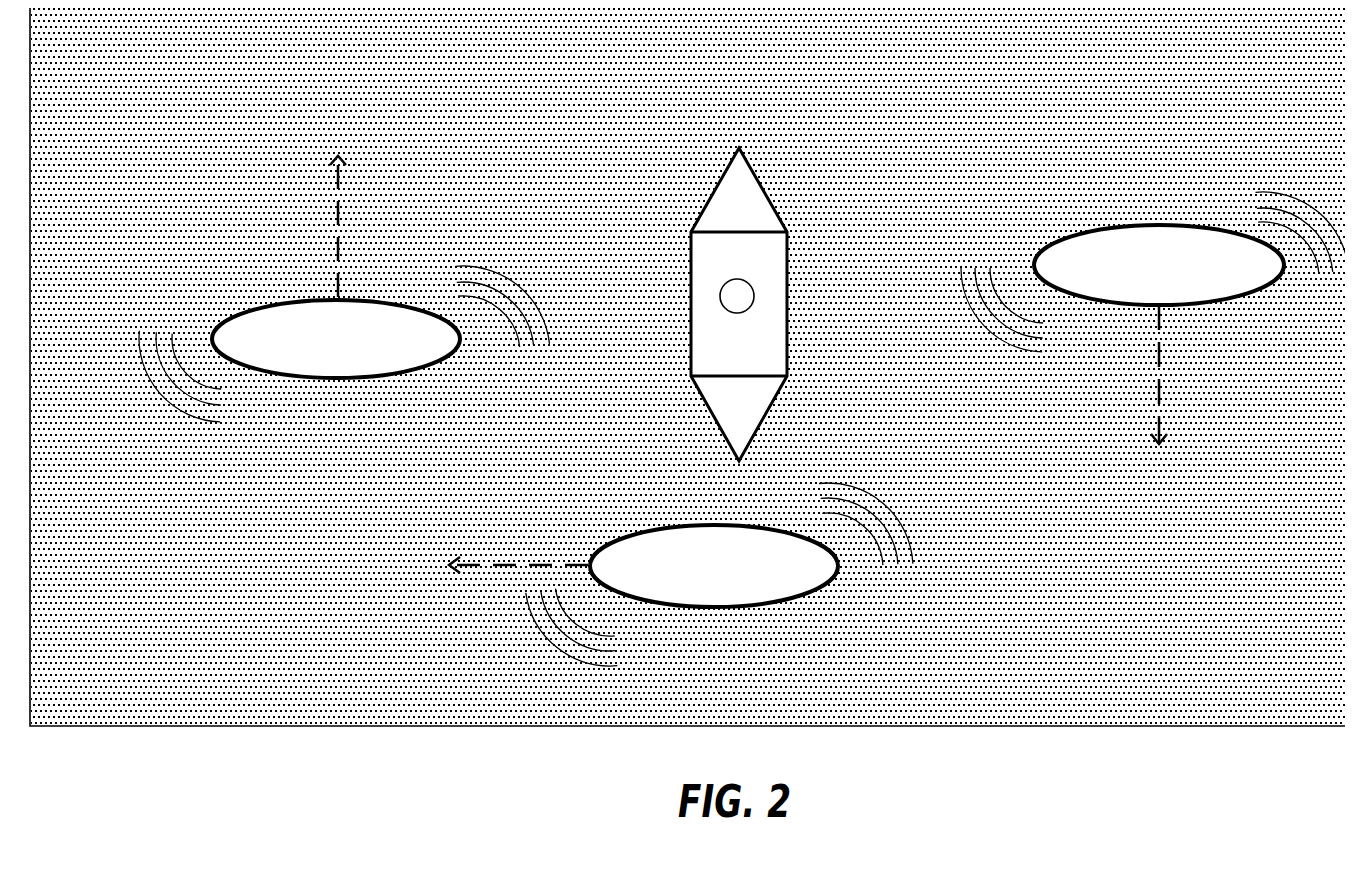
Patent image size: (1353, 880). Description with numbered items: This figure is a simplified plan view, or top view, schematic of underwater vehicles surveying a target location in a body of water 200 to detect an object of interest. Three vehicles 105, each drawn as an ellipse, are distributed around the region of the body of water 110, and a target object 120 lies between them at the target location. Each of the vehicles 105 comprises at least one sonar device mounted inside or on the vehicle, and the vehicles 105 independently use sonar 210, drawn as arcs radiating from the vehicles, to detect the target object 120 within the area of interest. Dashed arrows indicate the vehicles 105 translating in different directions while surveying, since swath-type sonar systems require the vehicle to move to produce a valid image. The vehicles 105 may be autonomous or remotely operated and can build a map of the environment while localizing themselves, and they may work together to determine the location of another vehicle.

The vehicles 105 is at (250, 295).
The body of water 110 is at (1193, 22).
The target object 120 is at (708, 178).
The body of water 200 is at (175, 108).
The sonar 210 is at (540, 333).